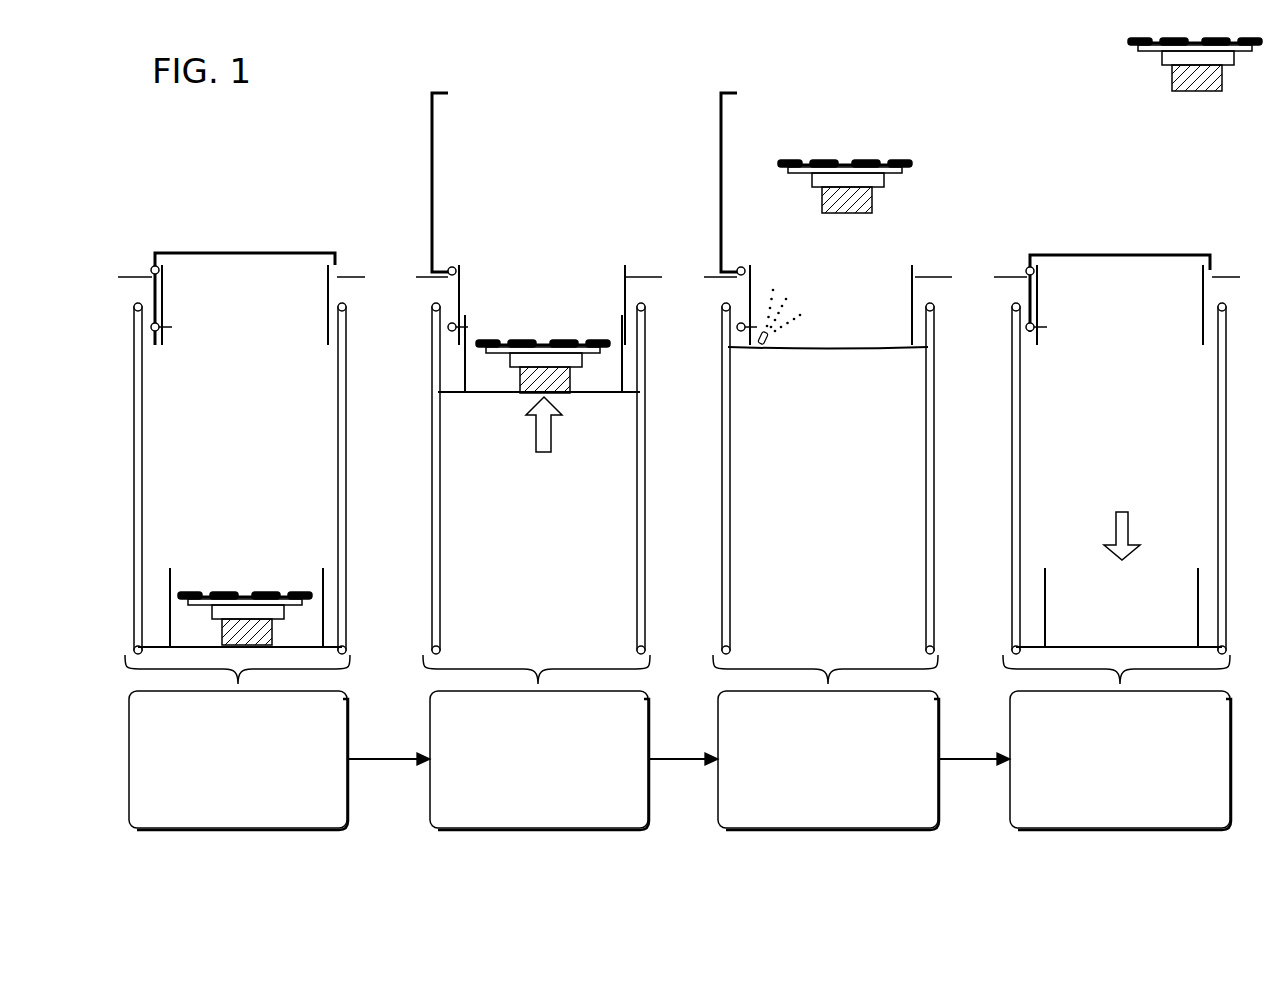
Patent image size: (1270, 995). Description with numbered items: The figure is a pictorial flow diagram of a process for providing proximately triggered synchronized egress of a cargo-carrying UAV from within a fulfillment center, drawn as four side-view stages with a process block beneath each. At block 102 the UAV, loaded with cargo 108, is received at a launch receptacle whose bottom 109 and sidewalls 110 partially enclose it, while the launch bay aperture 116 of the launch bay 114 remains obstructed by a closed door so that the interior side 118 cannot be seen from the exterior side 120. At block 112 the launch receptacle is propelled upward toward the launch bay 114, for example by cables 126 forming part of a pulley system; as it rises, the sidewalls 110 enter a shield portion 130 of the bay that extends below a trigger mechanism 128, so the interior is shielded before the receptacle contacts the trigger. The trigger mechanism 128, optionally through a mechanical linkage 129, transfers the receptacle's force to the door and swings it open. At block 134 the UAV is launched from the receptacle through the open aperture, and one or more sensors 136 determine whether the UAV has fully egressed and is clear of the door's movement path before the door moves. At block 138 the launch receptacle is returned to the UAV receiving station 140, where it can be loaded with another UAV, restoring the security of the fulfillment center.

The block 102 is at (238, 760).
The cargo 108 is at (309, 621).
The bottom 109 is at (598, 395).
The sidewalls 110 is at (618, 318).
The block 112 is at (539, 760).
The launch bay 114 is at (180, 229).
The launch bay aperture 116 is at (244, 316).
The interior side 118 is at (239, 390).
The exterior side 120 is at (267, 255).
The cables 126 is at (925, 482).
The trigger mechanism 128 is at (451, 332).
The mechanical linkage 129 is at (449, 291).
The shield portion 130 is at (1203, 336).
The block 134 is at (828, 760).
The sensors 136 is at (766, 342).
The block 138 is at (1120, 760).
The UAV receiving station 140 is at (1144, 570).